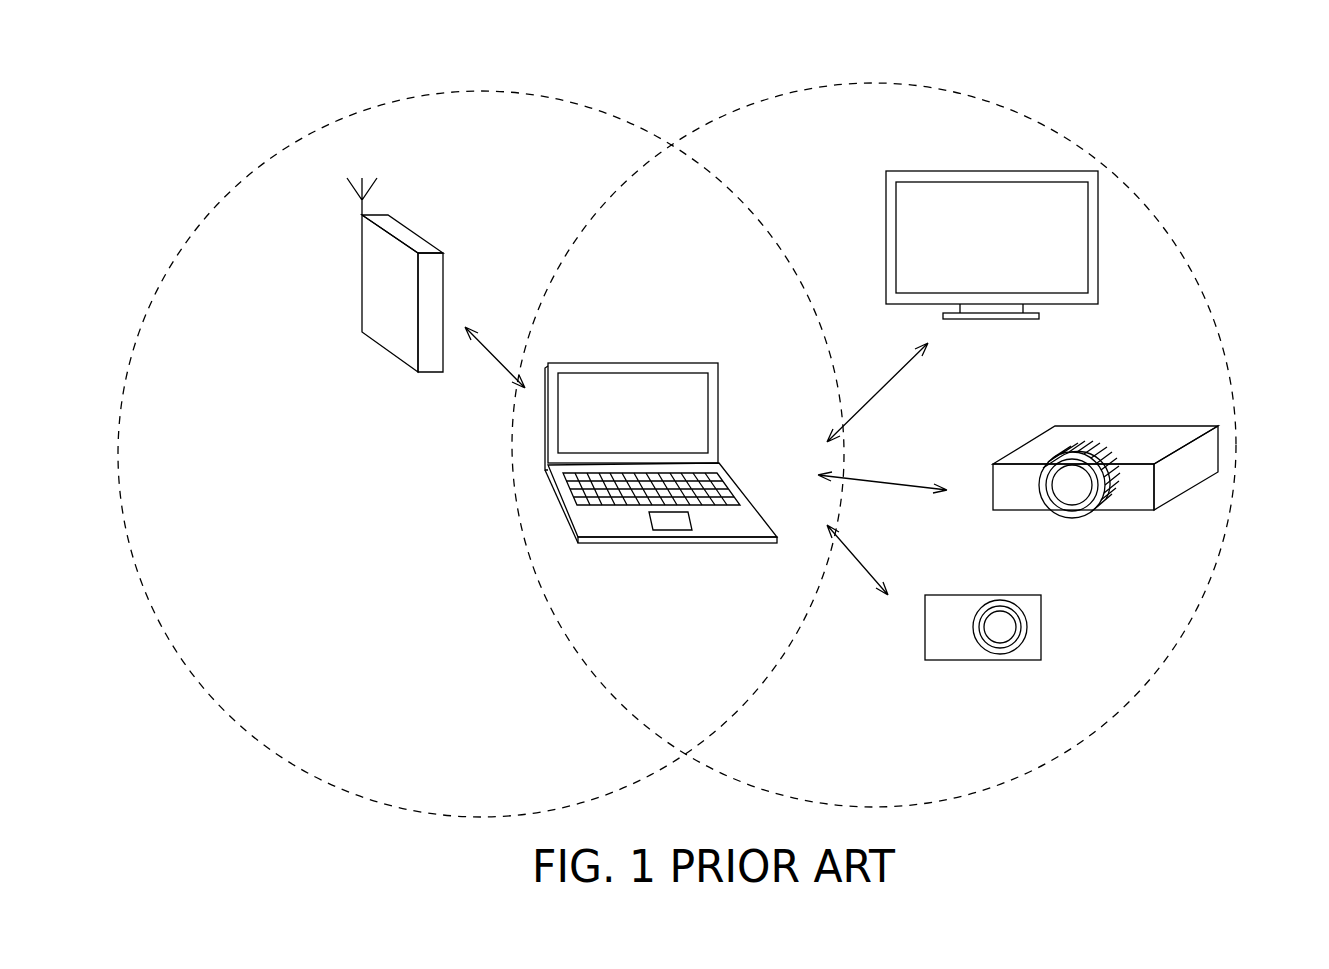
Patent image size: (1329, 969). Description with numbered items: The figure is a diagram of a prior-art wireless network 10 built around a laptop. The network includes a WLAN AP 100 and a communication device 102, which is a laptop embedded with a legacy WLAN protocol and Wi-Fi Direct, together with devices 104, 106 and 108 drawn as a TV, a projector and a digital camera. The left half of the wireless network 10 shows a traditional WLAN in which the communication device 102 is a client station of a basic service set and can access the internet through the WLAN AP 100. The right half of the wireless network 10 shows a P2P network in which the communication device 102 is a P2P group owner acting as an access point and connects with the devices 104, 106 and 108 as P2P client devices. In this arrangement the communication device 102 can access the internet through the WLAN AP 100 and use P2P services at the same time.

The wireless network 10 is at (1240, 125).
The WLAN AP 100 is at (422, 235).
The communication device 102 is at (668, 362).
The device 104 is at (1098, 265).
The device 106 is at (1145, 425).
The device 108 is at (1041, 627).